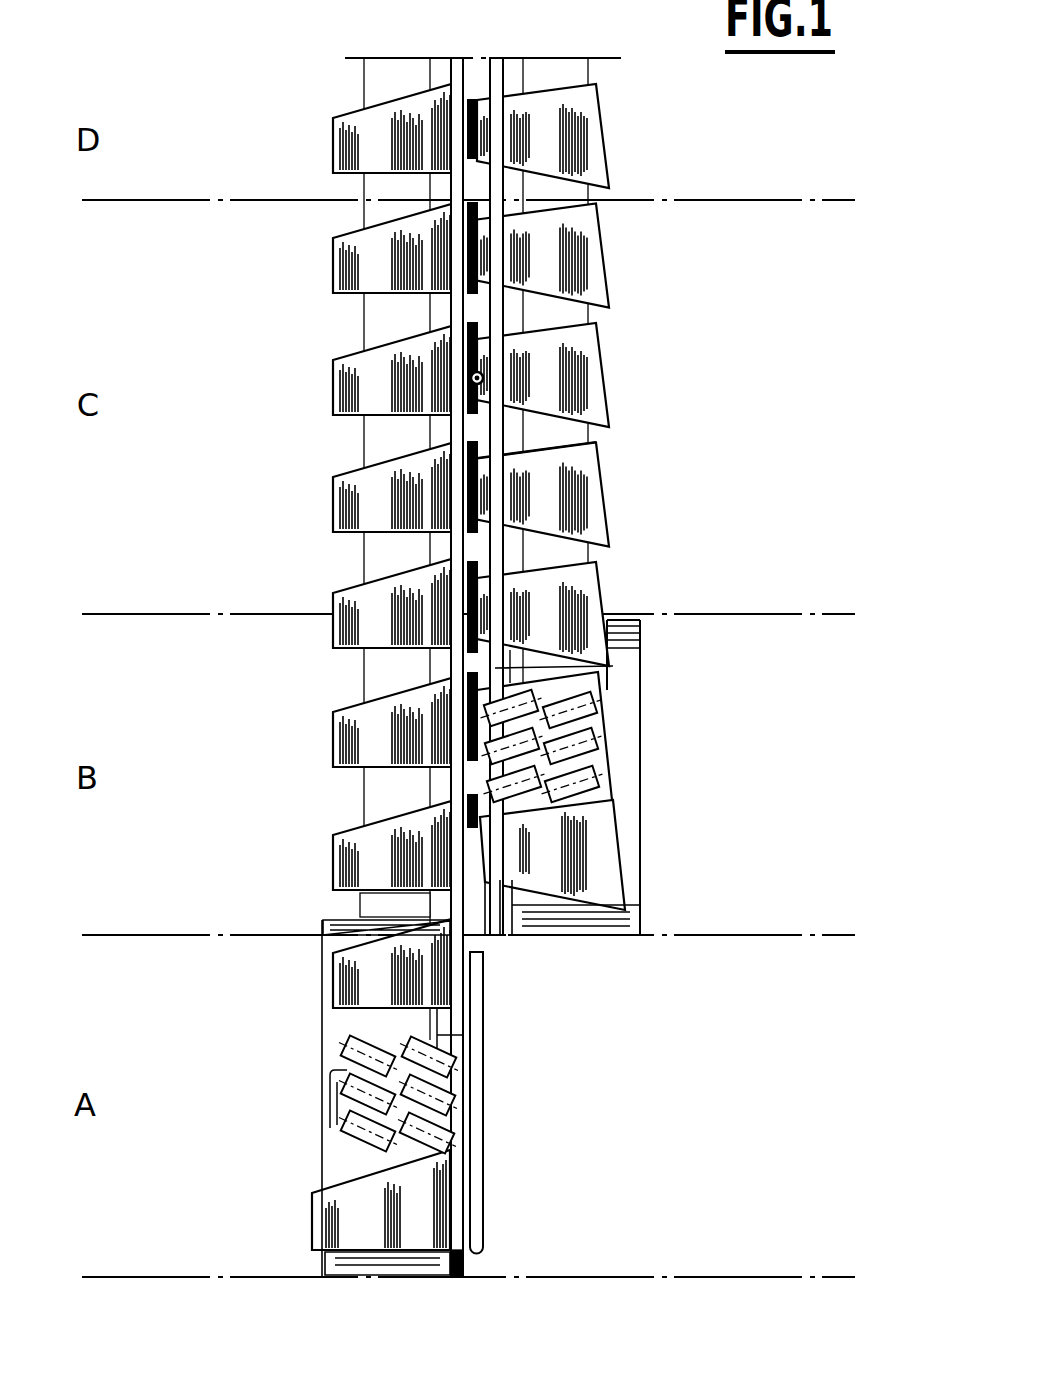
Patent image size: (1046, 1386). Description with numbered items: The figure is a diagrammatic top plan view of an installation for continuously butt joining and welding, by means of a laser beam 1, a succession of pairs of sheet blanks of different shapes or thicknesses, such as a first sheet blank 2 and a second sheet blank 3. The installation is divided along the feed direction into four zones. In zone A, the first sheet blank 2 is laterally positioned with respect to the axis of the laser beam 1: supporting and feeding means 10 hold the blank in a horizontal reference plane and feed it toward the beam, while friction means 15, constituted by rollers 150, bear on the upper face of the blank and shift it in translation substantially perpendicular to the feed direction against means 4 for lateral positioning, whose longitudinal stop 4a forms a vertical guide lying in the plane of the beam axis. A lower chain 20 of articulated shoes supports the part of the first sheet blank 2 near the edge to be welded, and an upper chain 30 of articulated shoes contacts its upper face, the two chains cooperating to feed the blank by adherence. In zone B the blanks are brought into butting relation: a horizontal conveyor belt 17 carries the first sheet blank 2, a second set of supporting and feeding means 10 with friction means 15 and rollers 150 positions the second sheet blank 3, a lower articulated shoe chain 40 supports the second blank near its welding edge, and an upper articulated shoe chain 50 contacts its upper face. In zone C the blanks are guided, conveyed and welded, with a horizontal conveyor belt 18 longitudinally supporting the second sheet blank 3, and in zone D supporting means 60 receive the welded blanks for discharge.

The supporting means for welded sheet blanks 60 is at (396, 664).
The laser beam 1 is at (484, 378).
The first sheet blank 2 is at (352, 506).
The second sheet blank 3 is at (596, 522).
The means for laterally positioning 4 is at (486, 1132).
The longitudinal stop 4a is at (484, 1188).
The supporting and feeding means 10 is at (642, 827).
The friction means 15 is at (600, 713).
The horizontal conveyor belt 17 is at (386, 790).
The horizontal conveyor belt 18 is at (556, 446).
The lower chain 20 is at (466, 1270).
The upper chain 30 is at (457, 995).
The lower articulated shoe chain 40 is at (490, 932).
The upper articulated shoe chain 50 is at (608, 648).
The rollers 150 is at (588, 747).